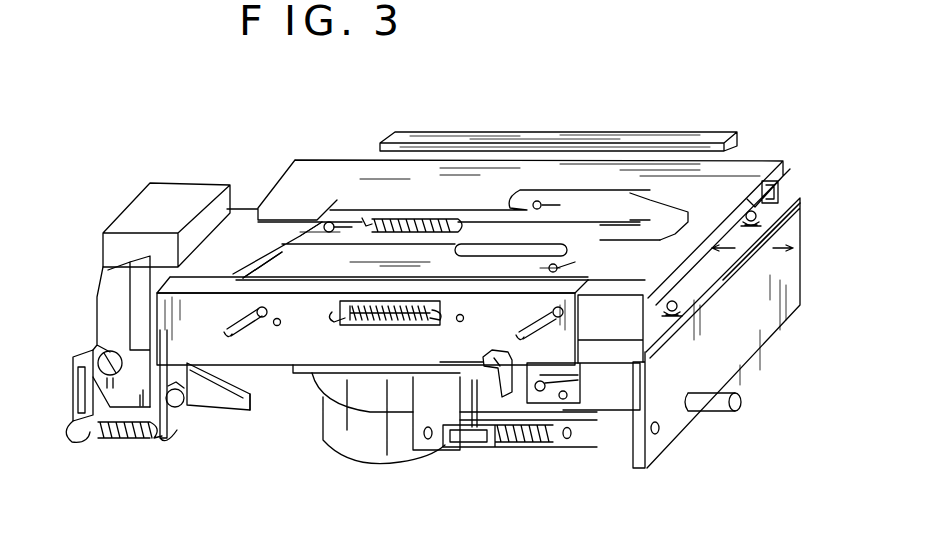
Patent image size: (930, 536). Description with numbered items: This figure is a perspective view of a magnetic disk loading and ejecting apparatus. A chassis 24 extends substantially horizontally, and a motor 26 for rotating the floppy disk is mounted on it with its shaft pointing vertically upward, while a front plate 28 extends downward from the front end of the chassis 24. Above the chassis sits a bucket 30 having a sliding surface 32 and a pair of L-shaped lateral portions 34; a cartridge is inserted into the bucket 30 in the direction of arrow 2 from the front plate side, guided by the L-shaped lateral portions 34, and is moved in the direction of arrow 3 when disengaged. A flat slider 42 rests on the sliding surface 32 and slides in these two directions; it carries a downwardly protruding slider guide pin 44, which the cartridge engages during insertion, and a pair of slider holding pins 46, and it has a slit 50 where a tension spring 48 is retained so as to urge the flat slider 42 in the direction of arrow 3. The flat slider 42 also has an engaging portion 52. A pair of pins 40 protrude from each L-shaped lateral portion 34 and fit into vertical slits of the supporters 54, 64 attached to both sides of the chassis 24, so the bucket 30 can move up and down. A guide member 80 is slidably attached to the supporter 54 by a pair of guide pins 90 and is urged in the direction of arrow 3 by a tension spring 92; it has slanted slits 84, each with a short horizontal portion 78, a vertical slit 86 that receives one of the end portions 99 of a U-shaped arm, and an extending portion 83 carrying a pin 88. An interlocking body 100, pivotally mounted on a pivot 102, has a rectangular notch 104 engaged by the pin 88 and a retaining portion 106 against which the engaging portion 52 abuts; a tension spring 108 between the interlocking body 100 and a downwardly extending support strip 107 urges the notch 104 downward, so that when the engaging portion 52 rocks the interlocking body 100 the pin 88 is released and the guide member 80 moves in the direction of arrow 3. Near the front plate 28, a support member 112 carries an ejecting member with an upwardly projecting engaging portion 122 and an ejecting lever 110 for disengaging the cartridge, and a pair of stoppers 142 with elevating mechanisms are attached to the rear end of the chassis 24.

The arrow 2 is at (716, 247).
The arrow 3 is at (795, 247).
The chassis 24 is at (738, 243).
The motor 26 is at (366, 458).
The front plate 28 is at (765, 342).
The bucket 30 is at (745, 182).
The sliding surface 32 is at (666, 161).
The L-shaped lateral portions 34 is at (789, 169).
The pins 40 is at (265, 318).
The flat slider 42 is at (616, 208).
The slider guide pin 44 is at (329, 222).
The slider holding pins 46 is at (535, 201).
The tension spring 48 is at (386, 219).
The slit 50 is at (636, 213).
The engaging portion 52 is at (318, 250).
The supporter 54 is at (622, 325).
The supporter 64 is at (577, 142).
The short horizontal portion 78 is at (296, 246).
The guide member 80 is at (435, 371).
The extending portion 83 is at (245, 366).
The slanted slits 84 is at (226, 320).
The vertical slit 86 is at (500, 435).
The pin 88 is at (176, 389).
The guide pins 90 is at (293, 323).
The tension spring 92 is at (380, 324).
The end portions 99 is at (493, 350).
The interlocking body 100 is at (202, 412).
The pivot 102 is at (96, 342).
The rectangular notch 104 is at (172, 442).
The retaining portion 106 is at (136, 274).
The downwardly extending support strip 107 is at (73, 380).
The tension spring 108 is at (118, 446).
The ejecting lever 110 is at (702, 412).
The support member 112 is at (601, 440).
The engaging portion 122 is at (570, 440).
The stoppers 142 is at (746, 211).